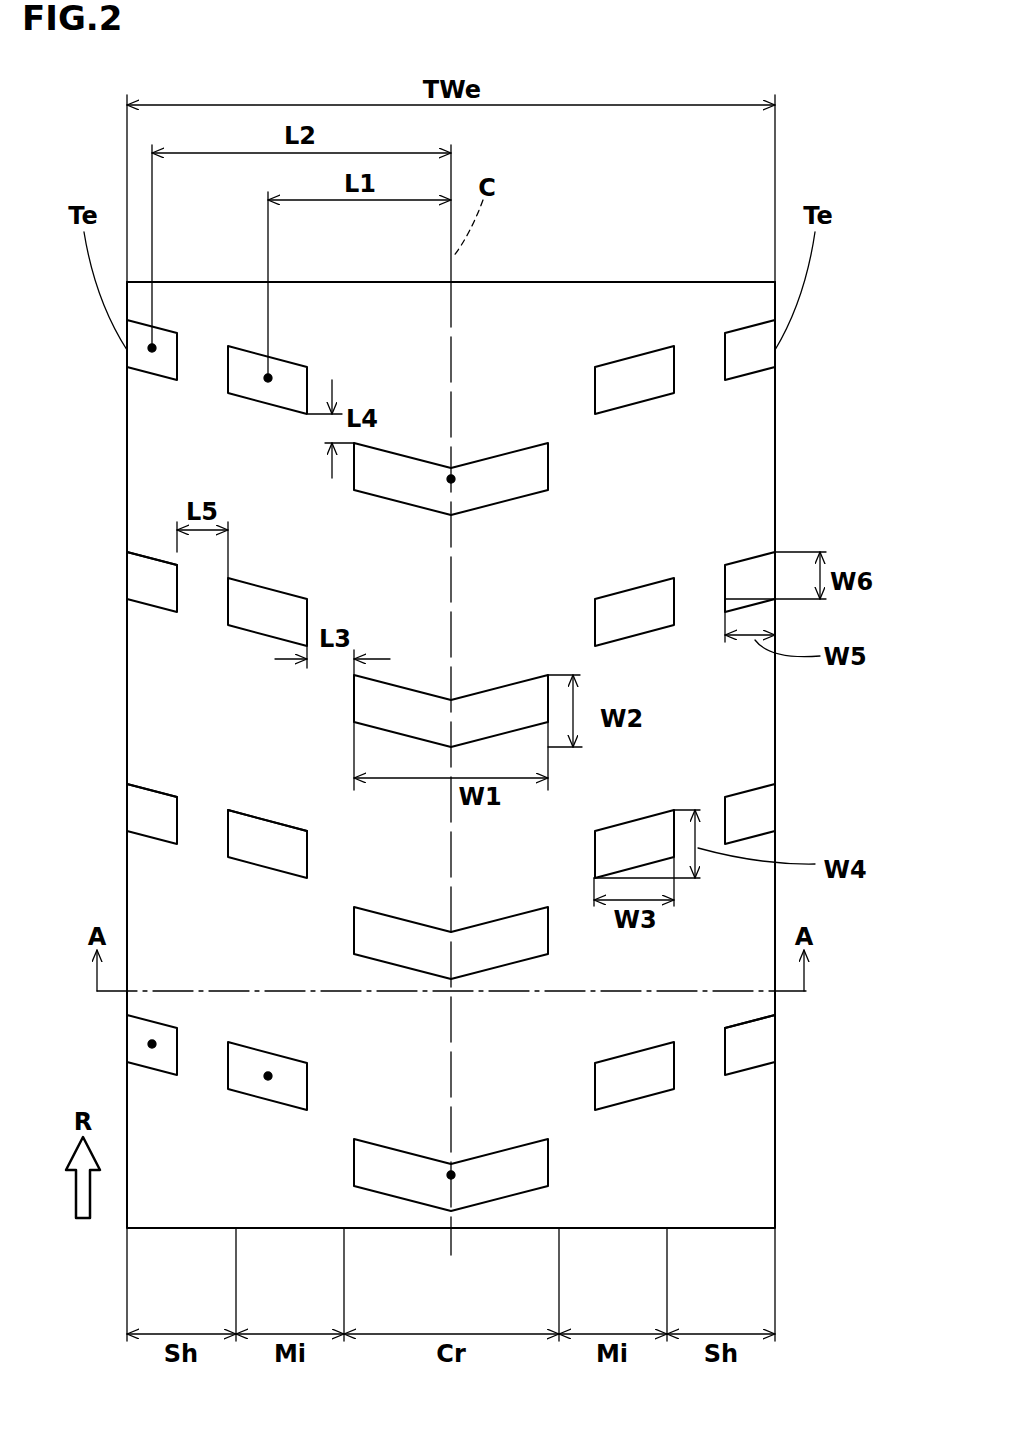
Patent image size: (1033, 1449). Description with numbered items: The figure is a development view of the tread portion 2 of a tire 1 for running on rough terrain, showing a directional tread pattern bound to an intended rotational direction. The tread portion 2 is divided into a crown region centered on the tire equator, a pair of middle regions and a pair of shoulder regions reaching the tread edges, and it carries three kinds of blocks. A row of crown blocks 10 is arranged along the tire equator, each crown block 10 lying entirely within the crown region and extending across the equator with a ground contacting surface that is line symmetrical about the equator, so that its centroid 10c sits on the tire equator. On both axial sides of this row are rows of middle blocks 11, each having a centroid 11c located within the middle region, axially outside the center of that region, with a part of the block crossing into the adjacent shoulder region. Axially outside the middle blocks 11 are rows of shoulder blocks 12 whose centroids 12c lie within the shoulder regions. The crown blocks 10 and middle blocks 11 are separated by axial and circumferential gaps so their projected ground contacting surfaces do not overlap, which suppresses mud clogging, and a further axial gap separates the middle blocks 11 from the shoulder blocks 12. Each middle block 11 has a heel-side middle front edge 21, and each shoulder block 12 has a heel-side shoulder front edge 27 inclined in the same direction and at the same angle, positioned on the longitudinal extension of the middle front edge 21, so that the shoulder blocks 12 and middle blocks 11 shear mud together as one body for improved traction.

The tire 1 is at (599, 280).
The tread portion 2 is at (513, 345).
The crown block 10 is at (508, 468).
The centroid of the ground contacting surface of the crown block 10c is at (452, 479).
The middle block 11 is at (244, 375).
The centroid of the ground contacting surface of the middle block 11c is at (268, 378).
The shoulder block 12 is at (163, 358).
The centroid of the ground contacting surface of the shoulder block 12c is at (150, 349).
The middle front edge 21 is at (265, 818).
The shoulder front edge 27 is at (150, 557).